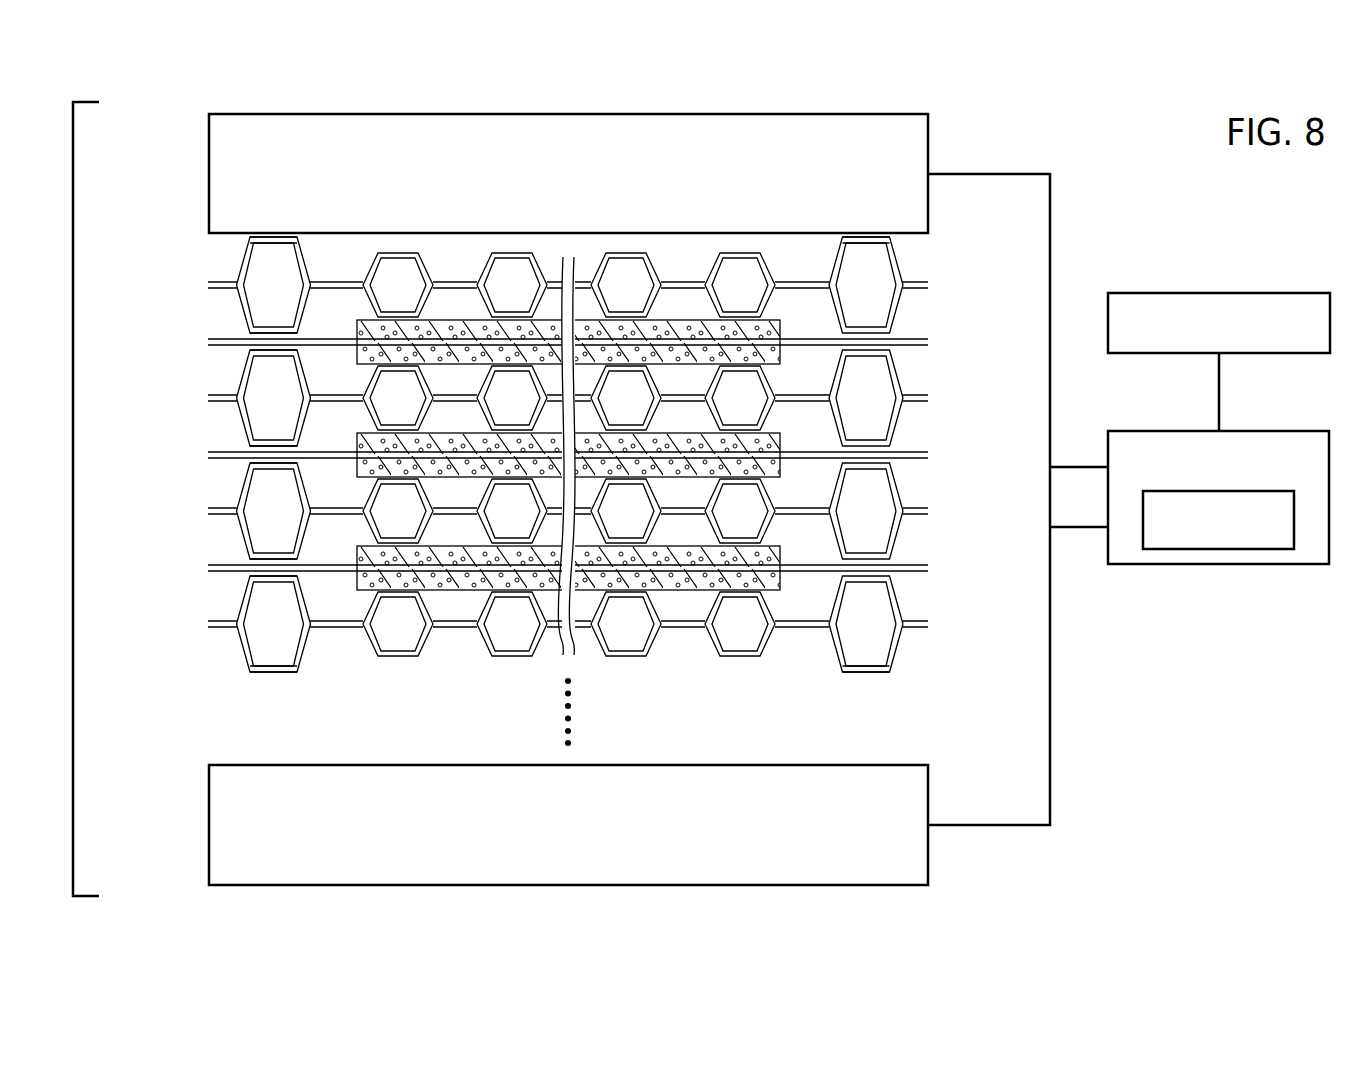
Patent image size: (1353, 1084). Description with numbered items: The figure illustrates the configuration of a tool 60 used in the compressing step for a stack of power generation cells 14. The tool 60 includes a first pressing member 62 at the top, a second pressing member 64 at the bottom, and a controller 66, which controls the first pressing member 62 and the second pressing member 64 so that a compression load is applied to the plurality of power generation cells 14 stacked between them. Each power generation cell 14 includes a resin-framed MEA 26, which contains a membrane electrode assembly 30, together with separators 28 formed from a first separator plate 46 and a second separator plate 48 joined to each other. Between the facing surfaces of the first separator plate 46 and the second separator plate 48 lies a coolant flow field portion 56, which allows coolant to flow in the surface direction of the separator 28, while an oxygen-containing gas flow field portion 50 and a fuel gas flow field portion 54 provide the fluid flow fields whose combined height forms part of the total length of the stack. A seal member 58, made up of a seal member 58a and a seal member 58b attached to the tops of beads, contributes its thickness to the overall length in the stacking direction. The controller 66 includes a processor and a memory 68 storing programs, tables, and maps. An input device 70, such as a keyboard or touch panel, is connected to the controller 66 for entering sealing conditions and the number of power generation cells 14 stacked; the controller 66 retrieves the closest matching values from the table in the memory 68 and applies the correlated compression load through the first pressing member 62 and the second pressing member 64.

The power generation cell 14 is at (944, 328).
The resin-framed MEA 26 is at (199, 346).
The separator 28 is at (199, 290).
The membrane electrode assembly 30 is at (341, 306).
The first separator plate 46 is at (242, 263).
The second separator plate 48 is at (242, 312).
The oxygen-containing gas flow field portion 50 is at (445, 373).
The fuel gas flow field portion 54 is at (447, 306).
The coolant flow field portion 56 is at (410, 298).
The seal member 58 is at (227, 355).
The seal member 58a is at (270, 233).
The seal member 58b is at (268, 677).
The tool 60 is at (1305, 198).
The first pressing member 62 is at (920, 143).
The second pressing member 64 is at (915, 786).
The controller 66 is at (1304, 431).
The memory 68 is at (1276, 551).
The input device 70 is at (1297, 293).